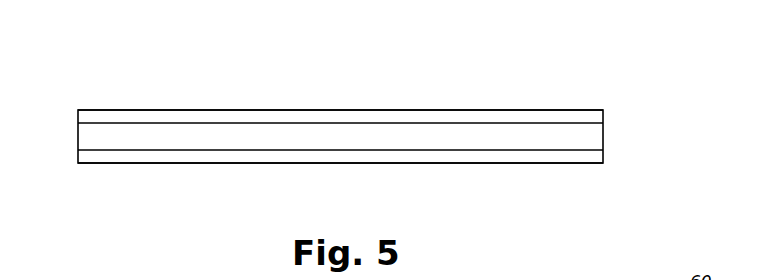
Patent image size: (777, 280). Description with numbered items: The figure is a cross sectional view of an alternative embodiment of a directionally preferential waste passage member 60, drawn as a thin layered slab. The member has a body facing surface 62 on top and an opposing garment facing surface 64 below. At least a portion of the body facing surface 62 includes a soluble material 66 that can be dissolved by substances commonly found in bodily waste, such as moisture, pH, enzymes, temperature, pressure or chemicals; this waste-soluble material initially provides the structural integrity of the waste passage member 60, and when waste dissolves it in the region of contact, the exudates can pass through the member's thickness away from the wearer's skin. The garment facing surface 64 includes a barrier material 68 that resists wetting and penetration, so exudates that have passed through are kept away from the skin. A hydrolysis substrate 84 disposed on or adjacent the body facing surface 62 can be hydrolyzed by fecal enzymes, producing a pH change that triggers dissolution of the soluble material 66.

The waste passage member 60 is at (630, 116).
The body facing surface 62 is at (124, 122).
The garment facing surface 64 is at (221, 151).
The soluble material 66 is at (525, 134).
The barrier material 68 is at (393, 156).
The hydrolysis substrate 84 is at (307, 109).